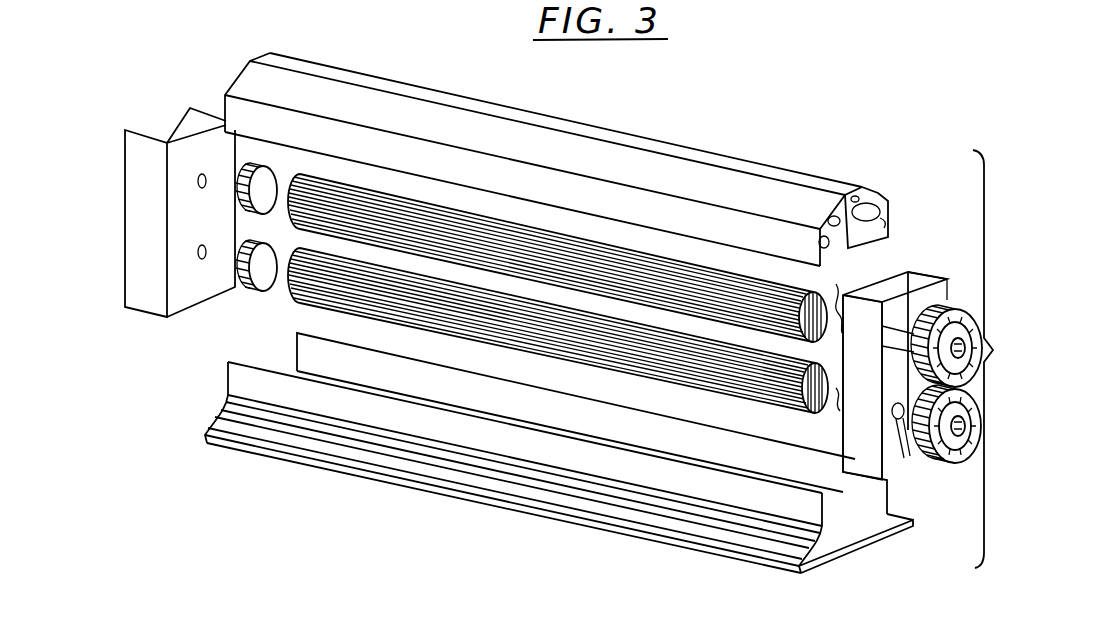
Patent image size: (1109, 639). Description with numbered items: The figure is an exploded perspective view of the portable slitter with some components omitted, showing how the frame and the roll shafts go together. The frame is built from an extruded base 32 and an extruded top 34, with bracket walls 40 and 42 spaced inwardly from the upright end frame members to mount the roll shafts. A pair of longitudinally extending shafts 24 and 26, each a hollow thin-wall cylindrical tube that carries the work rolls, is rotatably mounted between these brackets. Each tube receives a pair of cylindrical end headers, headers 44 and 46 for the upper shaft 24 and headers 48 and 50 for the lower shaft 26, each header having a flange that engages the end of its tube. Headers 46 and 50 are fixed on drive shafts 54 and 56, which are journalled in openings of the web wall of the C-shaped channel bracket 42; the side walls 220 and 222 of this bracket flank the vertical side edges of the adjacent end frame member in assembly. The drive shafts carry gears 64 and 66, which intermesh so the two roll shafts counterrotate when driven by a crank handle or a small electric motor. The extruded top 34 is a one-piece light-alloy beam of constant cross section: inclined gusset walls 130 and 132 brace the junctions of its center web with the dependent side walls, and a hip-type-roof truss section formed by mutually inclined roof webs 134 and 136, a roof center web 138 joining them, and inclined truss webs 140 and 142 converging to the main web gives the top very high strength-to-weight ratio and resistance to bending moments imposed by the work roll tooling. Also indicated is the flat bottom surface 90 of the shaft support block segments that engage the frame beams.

The shaft 24 is at (528, 222).
The shaft 26 is at (503, 351).
The extruded base 32 is at (368, 482).
The extruded top 34 is at (450, 86).
The bracket wall 40 is at (168, 127).
The bracket wall 42 is at (875, 273).
The end header 44 is at (273, 167).
The end header 46 is at (858, 282).
The end header 48 is at (250, 295).
The end header 50 is at (837, 412).
The drive shaft 54 is at (907, 320).
The drive shaft 56 is at (907, 459).
The gear 64 is at (960, 306).
The gear 66 is at (947, 459).
The flat bottom surface 90 is at (828, 220).
The inclined gusset wall 130 is at (819, 243).
The inclined gusset wall 132 is at (890, 224).
The roof web 134 is at (730, 185).
The roof web 136 is at (873, 190).
The roof center web 138 is at (662, 140).
The inclined truss web 140 is at (855, 195).
The inclined truss web 142 is at (870, 193).
The side wall 220 is at (853, 450).
The side wall 222 is at (936, 273).